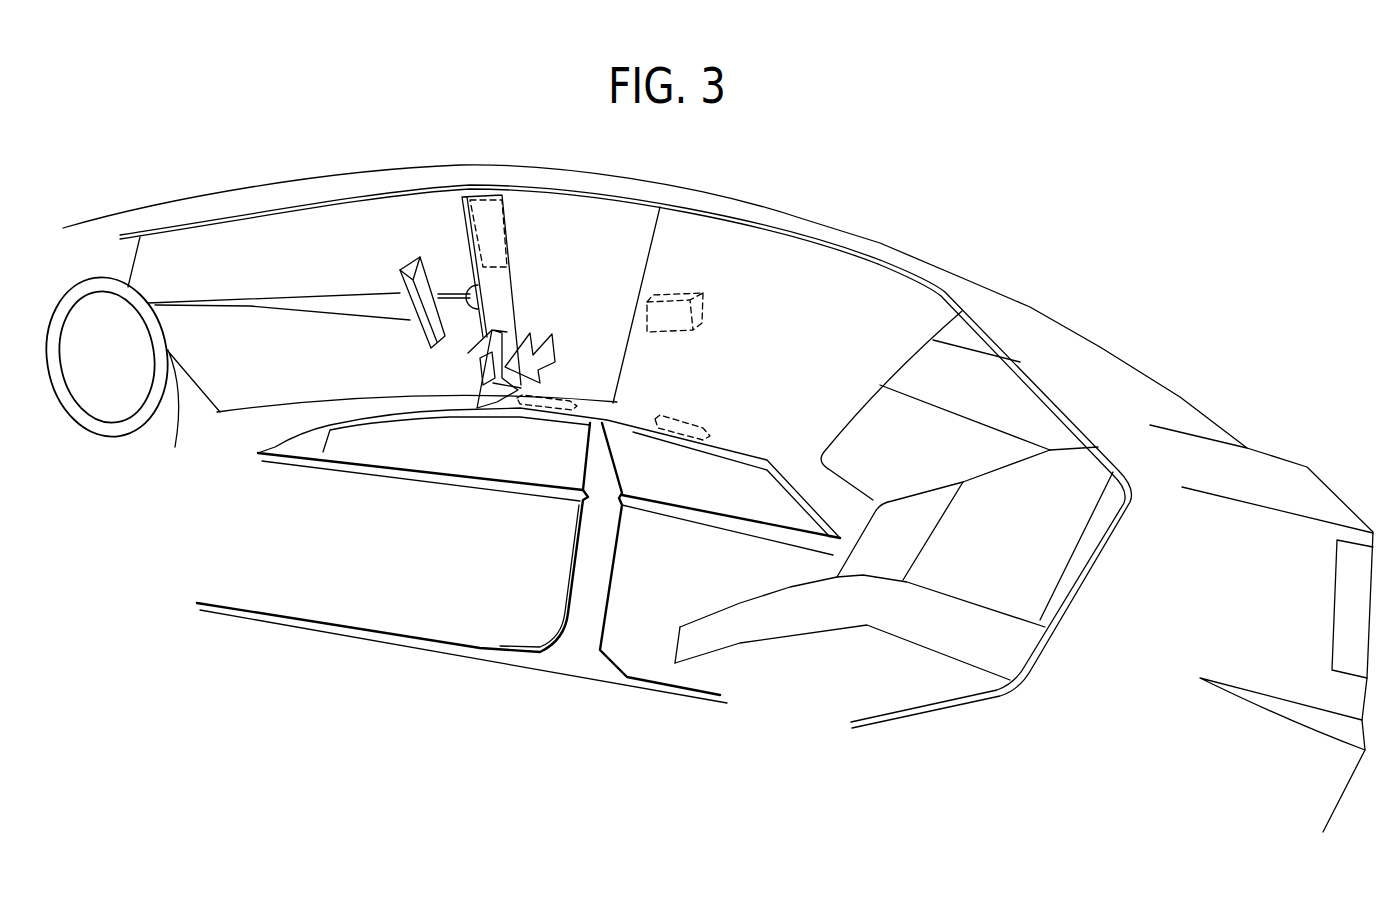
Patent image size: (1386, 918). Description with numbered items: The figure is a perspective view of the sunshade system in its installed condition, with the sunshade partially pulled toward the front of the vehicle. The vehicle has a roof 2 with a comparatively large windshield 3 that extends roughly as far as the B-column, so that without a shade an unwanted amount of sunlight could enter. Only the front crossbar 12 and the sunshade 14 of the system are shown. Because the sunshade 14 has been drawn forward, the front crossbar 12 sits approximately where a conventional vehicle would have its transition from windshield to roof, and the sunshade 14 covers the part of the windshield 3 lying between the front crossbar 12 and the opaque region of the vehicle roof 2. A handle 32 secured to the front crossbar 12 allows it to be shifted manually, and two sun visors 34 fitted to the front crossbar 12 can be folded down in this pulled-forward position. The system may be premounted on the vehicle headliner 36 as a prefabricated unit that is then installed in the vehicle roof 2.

The vehicle roof 2 is at (783, 217).
The windshield 3 is at (196, 233).
The front crossbar 12 is at (498, 273).
The sunshade 14 is at (607, 223).
The handle 32 is at (467, 285).
The sun visors 34 is at (480, 203).
The vehicle headliner 36 is at (892, 283).